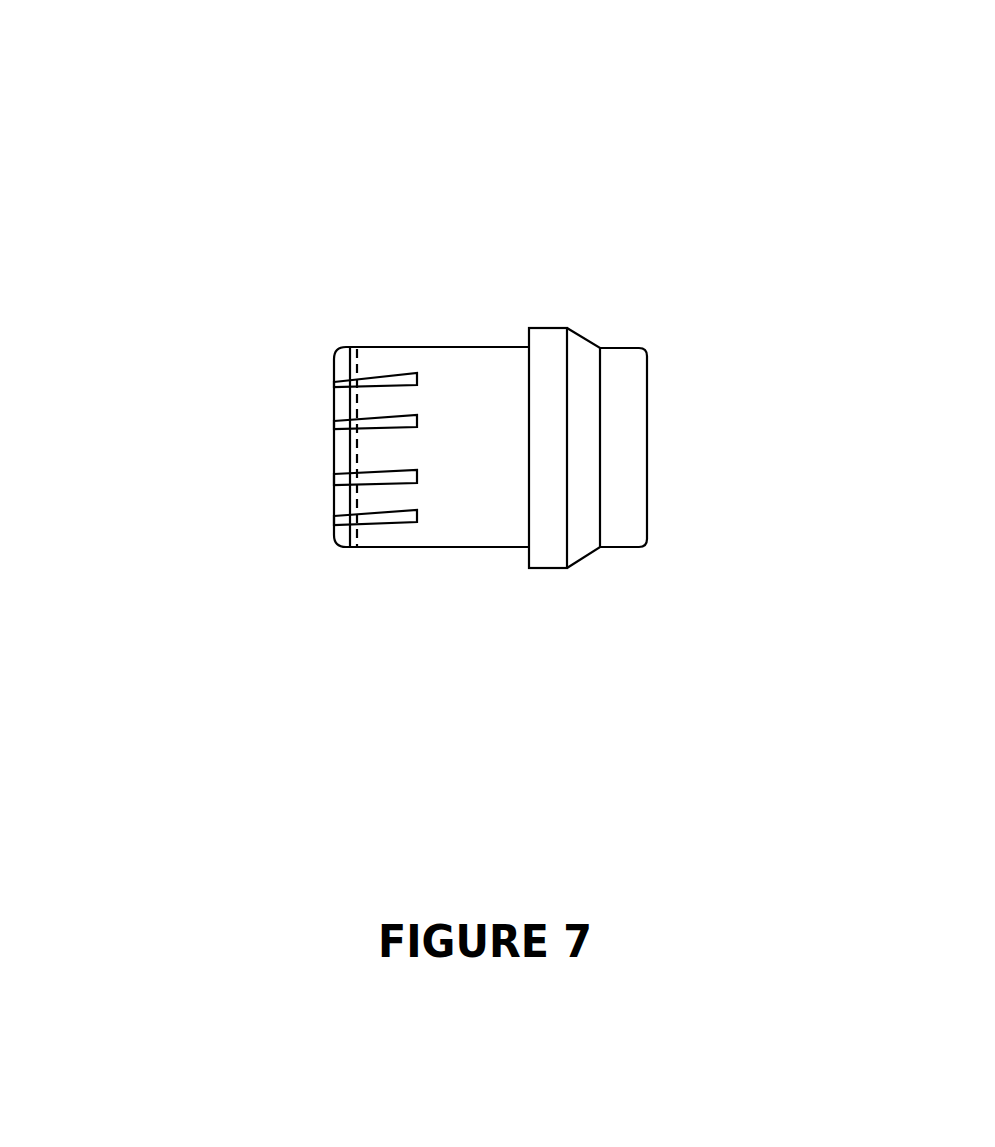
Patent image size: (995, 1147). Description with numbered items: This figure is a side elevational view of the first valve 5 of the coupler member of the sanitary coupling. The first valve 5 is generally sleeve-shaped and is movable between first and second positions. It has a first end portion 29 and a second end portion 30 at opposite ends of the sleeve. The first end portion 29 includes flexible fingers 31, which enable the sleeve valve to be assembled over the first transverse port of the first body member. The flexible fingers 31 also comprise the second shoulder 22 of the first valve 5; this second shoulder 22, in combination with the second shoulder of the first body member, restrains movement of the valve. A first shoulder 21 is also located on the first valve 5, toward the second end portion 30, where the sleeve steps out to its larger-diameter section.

The first valve 5 is at (466, 403).
The first shoulder 21 is at (526, 328).
The second shoulder 22 is at (357, 420).
The first end portion 29 is at (437, 515).
The second end portion 30 is at (623, 508).
The flexible fingers 31 is at (343, 398).